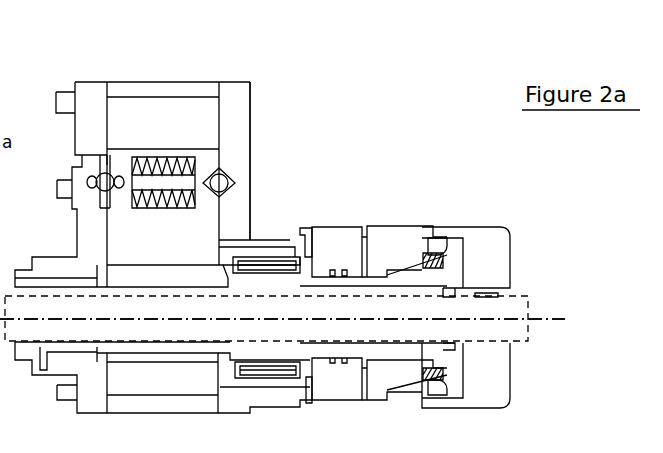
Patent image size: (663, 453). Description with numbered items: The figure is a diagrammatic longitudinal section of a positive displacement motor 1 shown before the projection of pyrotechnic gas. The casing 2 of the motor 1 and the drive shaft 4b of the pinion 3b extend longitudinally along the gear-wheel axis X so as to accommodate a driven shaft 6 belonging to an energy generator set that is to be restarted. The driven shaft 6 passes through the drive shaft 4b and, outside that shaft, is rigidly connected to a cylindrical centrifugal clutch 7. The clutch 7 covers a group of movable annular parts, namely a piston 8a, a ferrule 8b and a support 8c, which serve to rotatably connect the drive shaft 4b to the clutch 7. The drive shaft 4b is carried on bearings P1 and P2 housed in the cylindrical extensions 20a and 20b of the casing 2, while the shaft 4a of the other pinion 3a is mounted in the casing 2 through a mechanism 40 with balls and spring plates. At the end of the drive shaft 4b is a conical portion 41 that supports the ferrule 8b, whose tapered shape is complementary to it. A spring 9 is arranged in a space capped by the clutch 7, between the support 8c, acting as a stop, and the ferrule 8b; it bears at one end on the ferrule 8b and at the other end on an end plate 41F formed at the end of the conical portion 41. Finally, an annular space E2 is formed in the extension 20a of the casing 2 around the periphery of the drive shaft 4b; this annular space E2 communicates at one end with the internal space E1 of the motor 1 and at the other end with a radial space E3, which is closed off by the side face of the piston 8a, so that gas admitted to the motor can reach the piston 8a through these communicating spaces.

The positive displacement motor 1 is at (293, 161).
The casing 2 is at (250, 175).
The pinion 3a is at (213, 118).
The pinion 3b is at (207, 238).
The shaft of the pinion 4a is at (38, 145).
The drive shaft 4b is at (275, 282).
The driven shaft 6 is at (455, 297).
The centrifugal clutch 7 is at (478, 233).
The piston 8a is at (367, 397).
The ferrule 8b is at (400, 390).
The support 8c is at (446, 248).
The spring 9 is at (400, 383).
The cylindrical extension of the casing 20a is at (323, 230).
The cylindrical extension of the casing 20b is at (40, 377).
The mechanism with balls and spring plates 40 is at (158, 154).
The conical portion 41 is at (424, 378).
The end plate 41F is at (450, 377).
The internal space of the motor E1 is at (152, 268).
The annular space E2 is at (245, 247).
The radial space E3 is at (327, 237).
The bearing P1 is at (63, 352).
The bearing P2 is at (310, 387).
The gear-wheel axis X is at (282, 332).